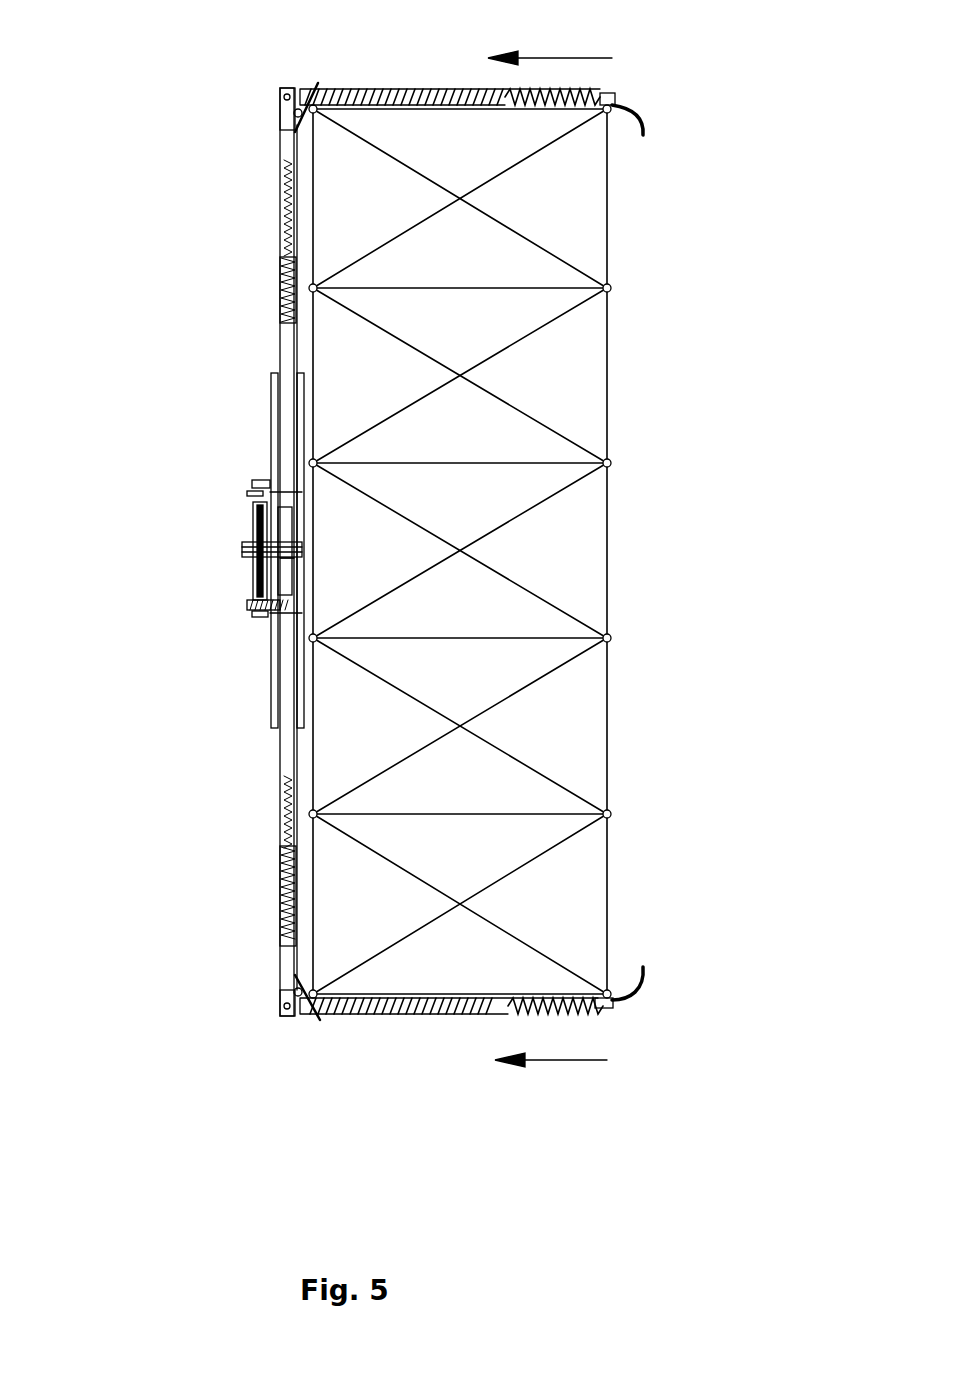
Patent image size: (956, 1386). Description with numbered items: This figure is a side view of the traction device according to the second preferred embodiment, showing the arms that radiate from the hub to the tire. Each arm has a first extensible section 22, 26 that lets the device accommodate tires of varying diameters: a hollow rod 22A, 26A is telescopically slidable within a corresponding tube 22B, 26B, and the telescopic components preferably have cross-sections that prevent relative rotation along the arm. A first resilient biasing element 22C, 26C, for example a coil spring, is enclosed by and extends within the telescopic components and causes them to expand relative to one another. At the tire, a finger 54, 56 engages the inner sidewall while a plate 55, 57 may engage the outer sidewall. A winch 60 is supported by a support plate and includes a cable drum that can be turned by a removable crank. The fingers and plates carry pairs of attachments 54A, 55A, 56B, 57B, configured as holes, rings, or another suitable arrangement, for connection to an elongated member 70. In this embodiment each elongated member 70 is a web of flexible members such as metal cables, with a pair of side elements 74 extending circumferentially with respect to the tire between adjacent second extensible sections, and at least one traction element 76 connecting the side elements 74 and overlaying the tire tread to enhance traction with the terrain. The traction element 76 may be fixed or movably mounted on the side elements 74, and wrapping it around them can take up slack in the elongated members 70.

The first extensible section 22 is at (193, 323).
The hollow rod 22A is at (277, 217).
The tube 22B is at (277, 312).
The first resilient biasing element 22C is at (285, 318).
The first extensible section 26 is at (200, 787).
The hollow rod 26A is at (273, 909).
The tube 26B is at (273, 813).
The first resilient biasing element 26C is at (277, 920).
The finger 54 is at (640, 112).
The attachment 54A is at (617, 120).
The plate 55 is at (290, 125).
The attachment 55A is at (300, 93).
The finger 56 is at (645, 992).
The attachment 56B is at (613, 993).
The plate 57 is at (293, 998).
The attachment 57B is at (305, 1016).
The winch 60 is at (207, 645).
The elongated member 70 is at (563, 551).
The side element 74 is at (607, 538).
The traction element 76 is at (515, 290).